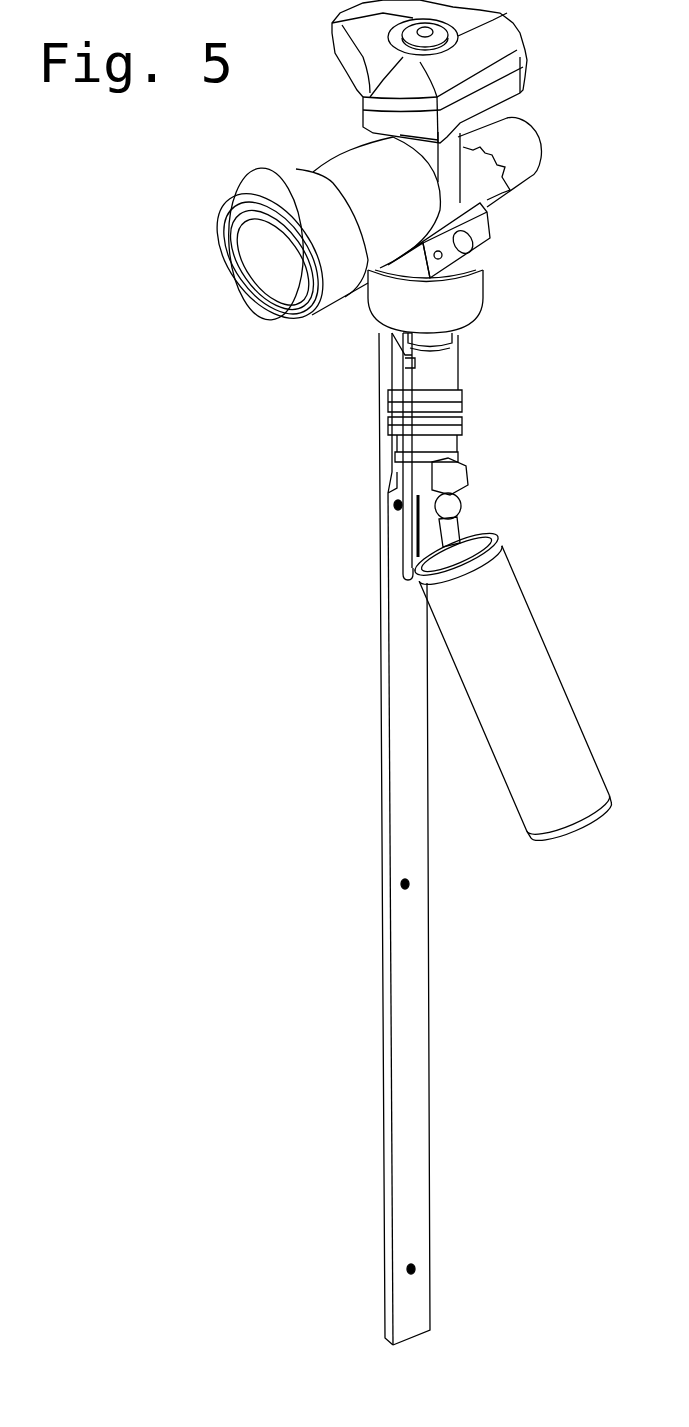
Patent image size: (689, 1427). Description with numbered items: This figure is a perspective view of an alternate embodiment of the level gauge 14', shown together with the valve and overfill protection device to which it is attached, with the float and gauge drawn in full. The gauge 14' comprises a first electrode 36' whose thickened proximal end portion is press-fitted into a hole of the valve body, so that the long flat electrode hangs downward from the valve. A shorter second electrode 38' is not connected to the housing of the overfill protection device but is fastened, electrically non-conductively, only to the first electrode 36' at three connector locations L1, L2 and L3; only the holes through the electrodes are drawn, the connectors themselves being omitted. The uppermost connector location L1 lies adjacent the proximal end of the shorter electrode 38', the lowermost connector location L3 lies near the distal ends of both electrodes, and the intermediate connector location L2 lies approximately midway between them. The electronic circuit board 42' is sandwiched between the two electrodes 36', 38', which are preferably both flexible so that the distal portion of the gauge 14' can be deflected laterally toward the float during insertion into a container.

The gauge 14' is at (332, 839).
The first electrode 36' is at (311, 839).
The second electrode 38' is at (500, 964).
The electronic circuit board 42' is at (315, 542).
The uppermost connector location L1 is at (395, 506).
The intermediate connector location L2 is at (402, 884).
The lowermost connector location L3 is at (408, 1268).